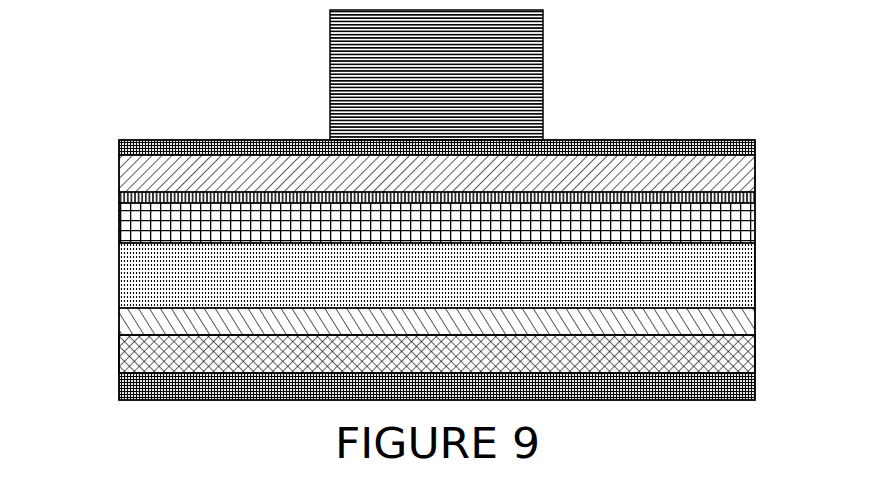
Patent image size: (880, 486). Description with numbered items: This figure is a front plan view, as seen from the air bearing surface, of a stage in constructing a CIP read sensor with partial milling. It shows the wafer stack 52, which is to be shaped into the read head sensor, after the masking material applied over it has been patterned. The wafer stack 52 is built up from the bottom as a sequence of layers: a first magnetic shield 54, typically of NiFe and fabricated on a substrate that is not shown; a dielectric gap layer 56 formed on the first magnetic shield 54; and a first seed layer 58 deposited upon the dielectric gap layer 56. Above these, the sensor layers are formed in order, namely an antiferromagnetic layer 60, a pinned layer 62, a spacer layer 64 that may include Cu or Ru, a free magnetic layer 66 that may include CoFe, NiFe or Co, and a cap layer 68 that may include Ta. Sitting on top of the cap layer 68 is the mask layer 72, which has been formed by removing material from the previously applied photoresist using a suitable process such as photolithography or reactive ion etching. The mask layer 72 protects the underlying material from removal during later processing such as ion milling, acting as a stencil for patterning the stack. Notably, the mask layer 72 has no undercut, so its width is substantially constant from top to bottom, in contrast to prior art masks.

The wafer stack 52 is at (74, 182).
The first magnetic shield 54 is at (119, 383).
The dielectric gap layer 56 is at (119, 357).
The first seed layer 58 is at (119, 320).
The antiferromagnetic layer 60 is at (119, 273).
The pinned layer 62 is at (755, 230).
The spacer layer 64 is at (755, 195).
The free magnetic layer 66 is at (755, 167).
The cap layer 68 is at (755, 145).
The mask layer 72 is at (330, 105).